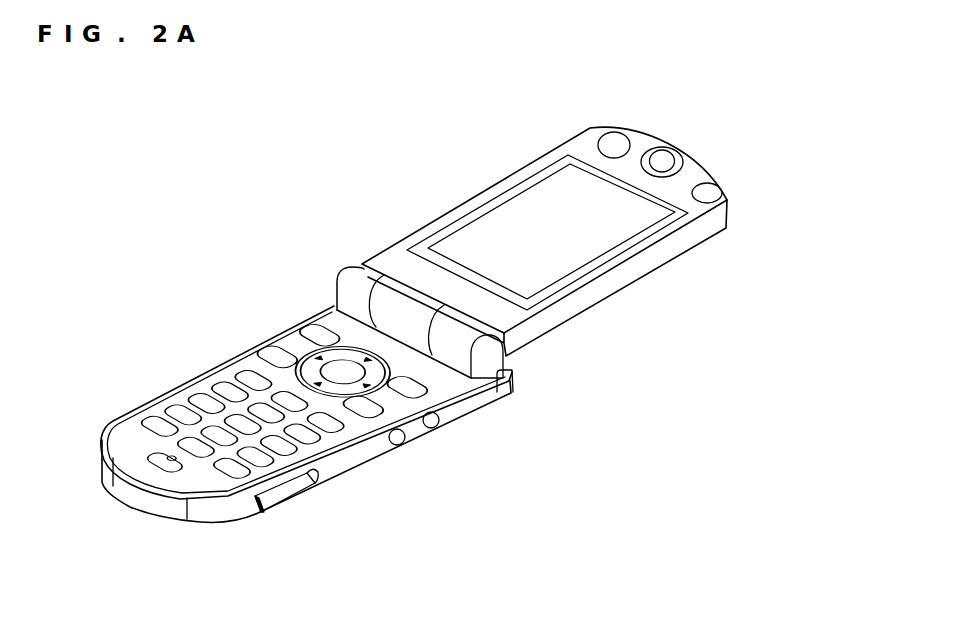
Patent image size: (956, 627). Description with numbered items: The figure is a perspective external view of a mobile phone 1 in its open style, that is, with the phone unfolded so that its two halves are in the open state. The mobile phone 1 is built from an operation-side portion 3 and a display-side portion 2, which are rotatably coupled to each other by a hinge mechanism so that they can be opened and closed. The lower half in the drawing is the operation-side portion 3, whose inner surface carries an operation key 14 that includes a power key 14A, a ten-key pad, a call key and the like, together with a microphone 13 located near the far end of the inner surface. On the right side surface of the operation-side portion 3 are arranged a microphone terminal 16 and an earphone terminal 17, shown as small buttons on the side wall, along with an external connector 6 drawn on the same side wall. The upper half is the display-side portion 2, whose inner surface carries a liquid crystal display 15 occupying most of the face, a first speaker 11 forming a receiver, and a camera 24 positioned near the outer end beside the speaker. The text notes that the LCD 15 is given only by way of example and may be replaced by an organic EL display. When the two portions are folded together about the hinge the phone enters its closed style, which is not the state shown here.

The mobile phone 1 is at (207, 147).
The display-side portion 2 is at (612, 287).
The operation-side portion 3 is at (477, 404).
The external connector 6 is at (302, 493).
The first speaker 11 is at (668, 158).
The microphone 13 is at (172, 458).
The operation key 14 is at (123, 385).
The power key 14A is at (338, 424).
The liquid crystal display (LCD) 15 is at (503, 214).
The microphone terminal 16 is at (442, 423).
The earphone terminal 17 is at (411, 444).
The camera 24 is at (610, 140).